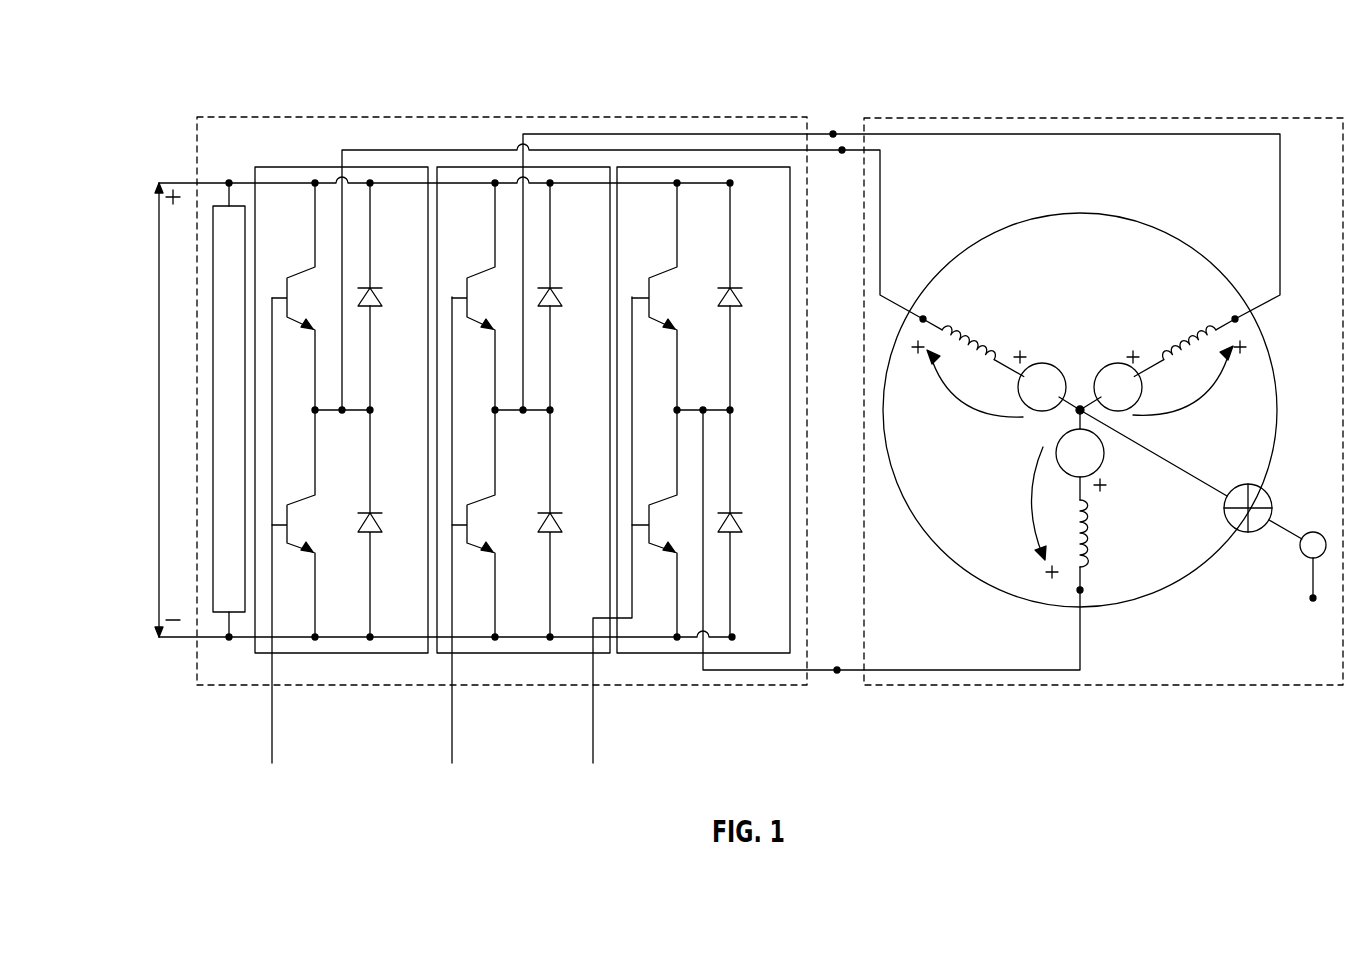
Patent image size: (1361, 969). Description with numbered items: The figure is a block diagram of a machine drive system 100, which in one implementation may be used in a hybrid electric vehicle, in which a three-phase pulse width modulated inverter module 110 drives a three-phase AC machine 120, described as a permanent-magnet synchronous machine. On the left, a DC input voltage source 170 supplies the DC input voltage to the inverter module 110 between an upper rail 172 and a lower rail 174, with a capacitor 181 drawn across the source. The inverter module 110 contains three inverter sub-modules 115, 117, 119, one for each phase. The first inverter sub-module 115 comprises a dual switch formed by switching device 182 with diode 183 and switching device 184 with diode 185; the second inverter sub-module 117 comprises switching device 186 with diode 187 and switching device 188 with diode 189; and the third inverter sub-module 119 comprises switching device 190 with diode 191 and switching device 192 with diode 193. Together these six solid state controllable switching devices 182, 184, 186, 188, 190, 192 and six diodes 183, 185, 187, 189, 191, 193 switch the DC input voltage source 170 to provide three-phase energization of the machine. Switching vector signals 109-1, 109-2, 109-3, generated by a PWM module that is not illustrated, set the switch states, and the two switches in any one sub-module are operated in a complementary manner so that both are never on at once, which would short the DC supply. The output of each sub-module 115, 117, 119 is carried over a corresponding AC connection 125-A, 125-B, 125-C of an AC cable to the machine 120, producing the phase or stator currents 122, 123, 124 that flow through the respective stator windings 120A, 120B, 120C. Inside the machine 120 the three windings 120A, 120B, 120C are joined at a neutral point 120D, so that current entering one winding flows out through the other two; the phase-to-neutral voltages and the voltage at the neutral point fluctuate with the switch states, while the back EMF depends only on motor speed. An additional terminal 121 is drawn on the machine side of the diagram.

The machine drive system 100 is at (333, 66).
The three-phase PWM inverter module 110 is at (258, 116).
The first inverter sub-module 115 is at (324, 653).
The second inverter sub-module 117 is at (523, 653).
The third inverter sub-module 119 is at (680, 653).
The three-phase AC machine 120 is at (925, 116).
The machine winding A 120A is at (987, 343).
The machine winding B 120B is at (1190, 342).
The machine winding C 120C is at (1083, 538).
The neutral point 120D is at (1081, 402).
The ground terminal 121 is at (1310, 578).
The phase A stator current 122 is at (882, 205).
The phase B stator current 123 is at (1120, 133).
The phase C stator current 124 is at (818, 672).
The AC connection 125-A is at (842, 153).
The AC connection 125-B is at (833, 131).
The AC connection 125-C is at (837, 667).
The DC input voltage source 170 is at (160, 487).
The positive DC bus 172 is at (172, 182).
The negative DC bus 174 is at (172, 640).
The DC link capacitor 181 is at (213, 223).
The solid state controllable switching device 182 is at (272, 298).
The diode 183 is at (378, 288).
The solid state controllable switching device 184 is at (272, 525).
The diode 185 is at (378, 513).
The solid state controllable switching device 186 is at (467, 305).
The diode 187 is at (558, 288).
The solid state controllable switching device 188 is at (467, 533).
The diode 189 is at (558, 513).
The solid state controllable switching device 190 is at (649, 305).
The diode 191 is at (738, 288).
The solid state controllable switching device 192 is at (649, 533).
The diode 193 is at (738, 513).
The switching vector signal 109-1 is at (270, 720).
The switching vector signal 109-2 is at (450, 720).
The switching vector signal 109-3 is at (593, 705).